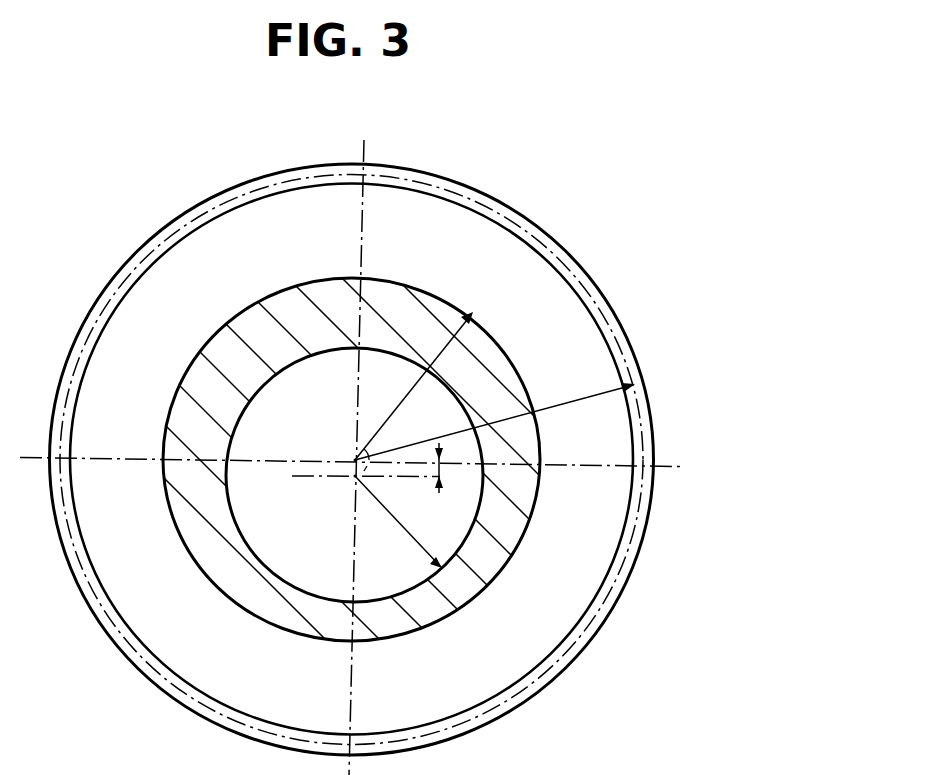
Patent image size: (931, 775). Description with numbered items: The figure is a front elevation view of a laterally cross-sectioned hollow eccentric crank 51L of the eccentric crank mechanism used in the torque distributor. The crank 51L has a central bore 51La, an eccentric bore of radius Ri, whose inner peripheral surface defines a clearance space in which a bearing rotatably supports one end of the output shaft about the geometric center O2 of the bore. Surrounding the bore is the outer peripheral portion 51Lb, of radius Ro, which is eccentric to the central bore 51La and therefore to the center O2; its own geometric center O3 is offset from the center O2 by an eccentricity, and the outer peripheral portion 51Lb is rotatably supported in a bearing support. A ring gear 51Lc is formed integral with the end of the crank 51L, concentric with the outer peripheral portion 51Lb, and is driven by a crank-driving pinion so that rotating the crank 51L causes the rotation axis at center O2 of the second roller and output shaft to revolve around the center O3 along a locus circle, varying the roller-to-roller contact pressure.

The eccentric crank 51L is at (586, 261).
The central bore 51La is at (452, 390).
The outer peripheral portion 51Lb is at (437, 292).
The ring gear 51Lc is at (613, 607).
The radius of outer peripheral portion Ro is at (398, 406).
The radius of central bore Ri is at (410, 536).
The geometric center of eccentric outer peripheral portions O3 is at (353, 458).
The geometric center of central bores O2 is at (352, 478).